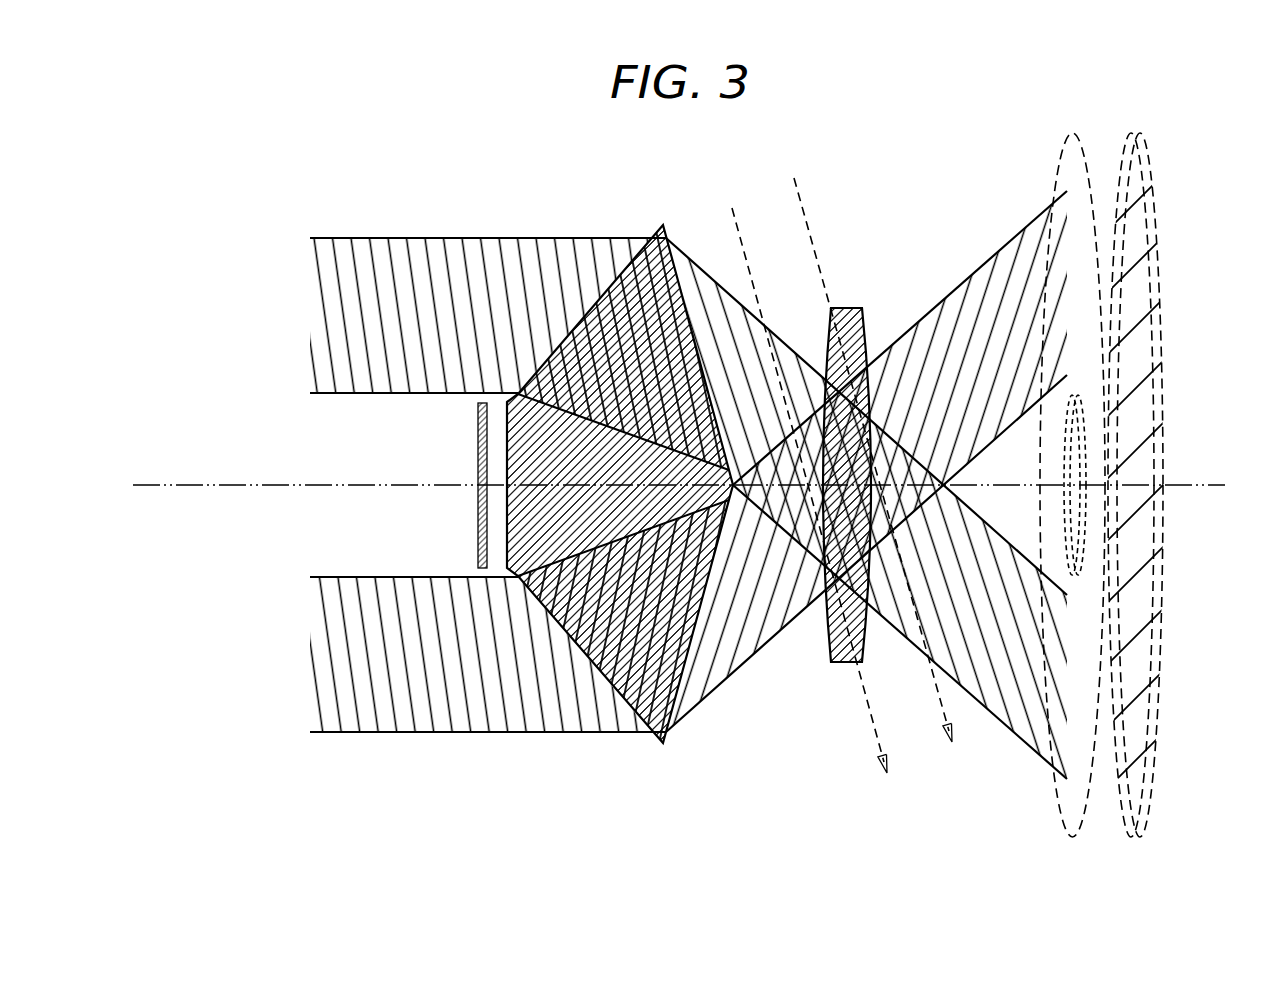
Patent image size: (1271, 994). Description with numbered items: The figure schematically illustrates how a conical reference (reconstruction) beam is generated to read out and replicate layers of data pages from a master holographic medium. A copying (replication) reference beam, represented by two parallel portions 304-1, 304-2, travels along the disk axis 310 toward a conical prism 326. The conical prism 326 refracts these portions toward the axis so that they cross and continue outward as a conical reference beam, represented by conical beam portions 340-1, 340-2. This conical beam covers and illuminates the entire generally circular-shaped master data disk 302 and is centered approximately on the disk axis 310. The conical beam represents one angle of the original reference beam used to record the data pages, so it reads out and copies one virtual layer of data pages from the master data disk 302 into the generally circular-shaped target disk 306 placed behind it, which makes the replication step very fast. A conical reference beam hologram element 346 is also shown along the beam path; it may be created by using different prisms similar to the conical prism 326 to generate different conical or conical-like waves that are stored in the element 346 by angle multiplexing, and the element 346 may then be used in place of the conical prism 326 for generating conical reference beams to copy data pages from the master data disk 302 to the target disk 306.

The master data disk 302 is at (1083, 177).
The target disk 306 is at (1130, 274).
The disk axis 310 is at (190, 485).
The conical prism 326 is at (588, 432).
The conical reference beam hologram element 346 is at (874, 295).
The reference beam portion 304-1 is at (412, 315).
The reference beam portion 304-2 is at (412, 654).
The conical beam portion 340-1 is at (987, 318).
The conical beam portion 340-2 is at (998, 640).